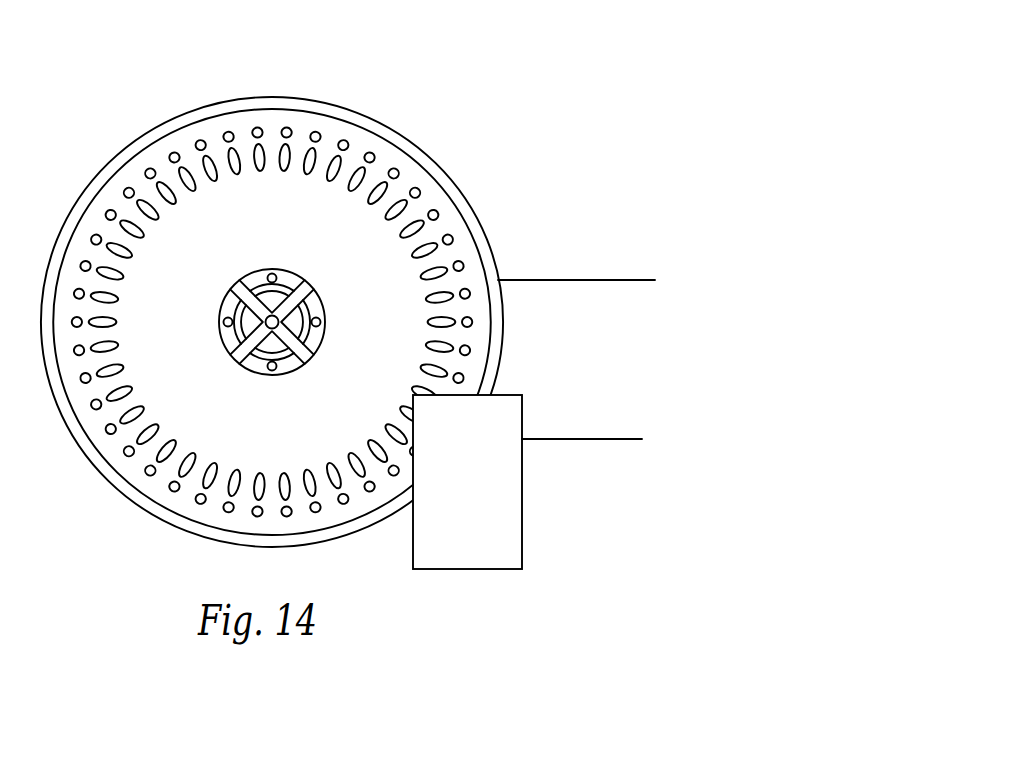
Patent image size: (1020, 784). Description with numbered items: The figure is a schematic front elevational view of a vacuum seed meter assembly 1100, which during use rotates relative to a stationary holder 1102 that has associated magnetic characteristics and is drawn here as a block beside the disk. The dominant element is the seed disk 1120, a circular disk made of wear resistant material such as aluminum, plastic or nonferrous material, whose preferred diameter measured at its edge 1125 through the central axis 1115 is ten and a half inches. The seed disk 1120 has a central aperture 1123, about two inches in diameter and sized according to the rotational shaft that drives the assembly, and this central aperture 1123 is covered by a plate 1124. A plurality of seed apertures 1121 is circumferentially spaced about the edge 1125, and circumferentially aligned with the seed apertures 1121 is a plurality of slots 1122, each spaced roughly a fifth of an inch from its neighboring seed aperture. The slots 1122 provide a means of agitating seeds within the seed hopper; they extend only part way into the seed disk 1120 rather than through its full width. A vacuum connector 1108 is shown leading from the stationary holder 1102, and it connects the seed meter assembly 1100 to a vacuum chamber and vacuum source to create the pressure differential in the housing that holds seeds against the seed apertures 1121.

The vacuum seed meter assembly 1100 is at (331, 297).
The stationary holder 1102 is at (513, 570).
The vacuum connector 1108 is at (600, 440).
The central axis 1115 is at (272, 322).
The seed disk 1120 is at (498, 272).
The seed apertures 1121 is at (318, 134).
The slots 1122 is at (159, 184).
The central aperture 1123 is at (298, 277).
The plate 1124 is at (220, 313).
The edge 1125 is at (272, 322).